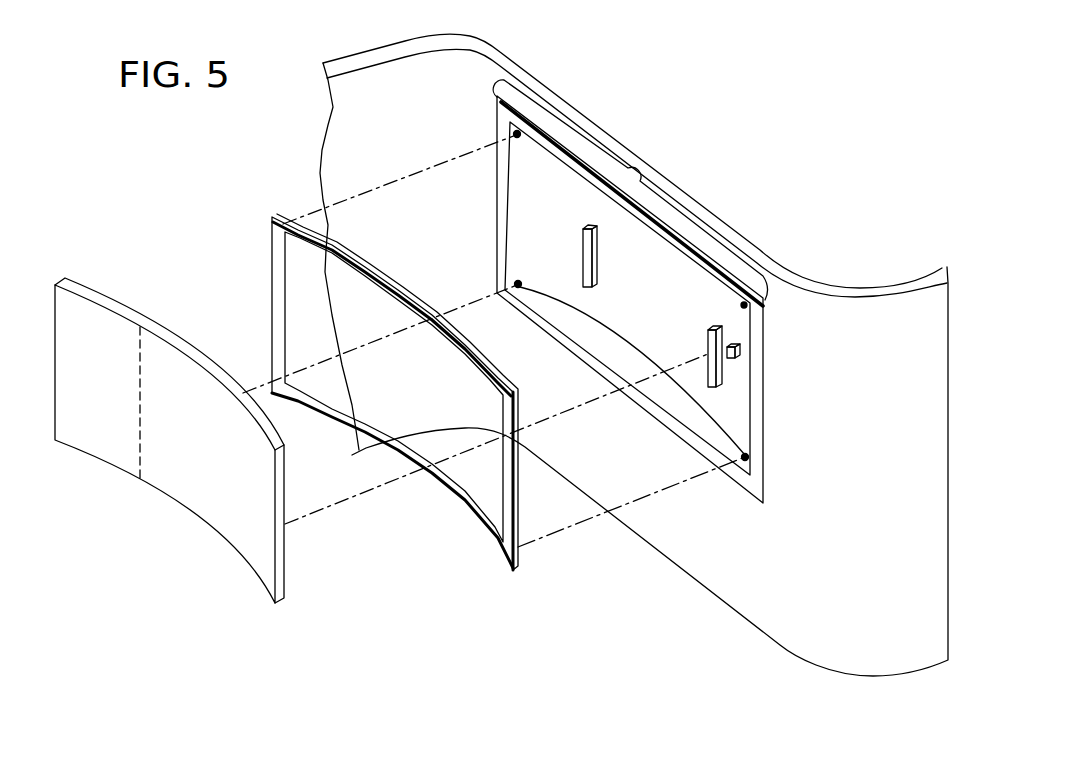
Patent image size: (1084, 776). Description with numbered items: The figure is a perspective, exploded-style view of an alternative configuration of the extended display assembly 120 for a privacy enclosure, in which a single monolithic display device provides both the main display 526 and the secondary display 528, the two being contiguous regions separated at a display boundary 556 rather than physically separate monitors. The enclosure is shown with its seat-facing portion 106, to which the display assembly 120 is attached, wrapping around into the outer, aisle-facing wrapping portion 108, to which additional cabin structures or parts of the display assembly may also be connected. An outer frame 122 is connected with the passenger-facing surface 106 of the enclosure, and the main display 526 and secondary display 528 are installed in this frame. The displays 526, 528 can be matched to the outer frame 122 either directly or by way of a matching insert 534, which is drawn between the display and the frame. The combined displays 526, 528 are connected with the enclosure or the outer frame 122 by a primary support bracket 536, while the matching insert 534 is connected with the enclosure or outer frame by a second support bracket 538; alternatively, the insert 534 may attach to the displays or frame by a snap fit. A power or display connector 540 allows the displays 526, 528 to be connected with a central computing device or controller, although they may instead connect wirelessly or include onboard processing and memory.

The extended display assembly 120 is at (675, 77).
The outer frame 122 is at (641, 164).
The seat-facing portion 106 is at (722, 210).
The aisle-facing wrapping portion 108 is at (938, 292).
The matching insert 534 is at (272, 283).
The main display 526 is at (229, 460).
The secondary display 528 is at (112, 366).
The display boundary 556 is at (138, 450).
The primary support bracket 536 is at (592, 245).
The second support bracket 538 is at (514, 135).
The power or display connector 540 is at (741, 351).